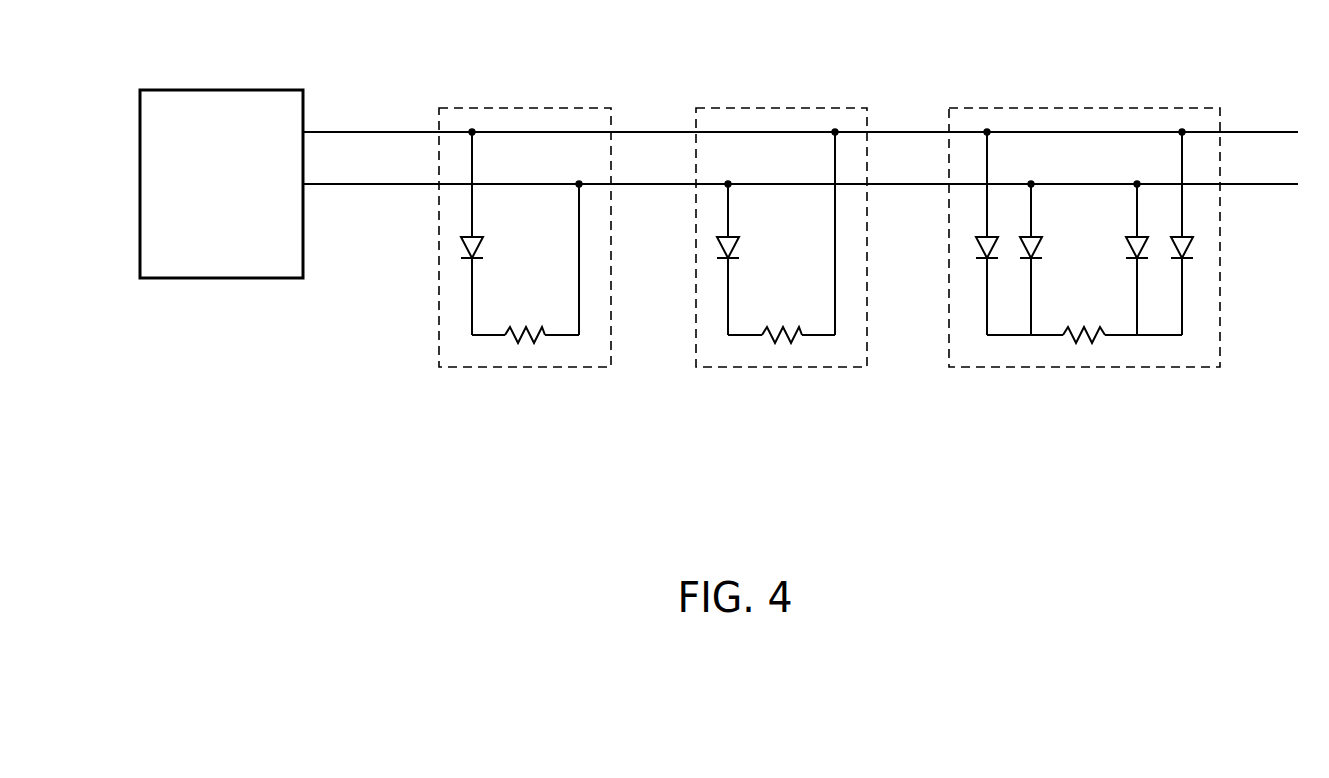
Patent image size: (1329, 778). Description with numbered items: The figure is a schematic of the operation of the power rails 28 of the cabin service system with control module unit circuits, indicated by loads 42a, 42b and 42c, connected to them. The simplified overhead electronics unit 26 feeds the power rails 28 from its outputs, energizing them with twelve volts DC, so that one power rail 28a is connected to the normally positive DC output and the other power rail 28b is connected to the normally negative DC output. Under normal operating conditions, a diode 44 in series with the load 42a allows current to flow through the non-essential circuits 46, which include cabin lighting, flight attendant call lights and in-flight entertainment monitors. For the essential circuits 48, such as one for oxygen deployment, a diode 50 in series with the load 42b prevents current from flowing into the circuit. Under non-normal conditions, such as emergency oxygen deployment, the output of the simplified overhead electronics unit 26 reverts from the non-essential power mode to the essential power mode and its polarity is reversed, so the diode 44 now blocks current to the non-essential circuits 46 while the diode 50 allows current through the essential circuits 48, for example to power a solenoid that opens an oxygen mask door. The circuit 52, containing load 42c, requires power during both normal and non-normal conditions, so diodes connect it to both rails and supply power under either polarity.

The simplified overhead electronics unit 26 is at (229, 90).
The power rails 28 is at (803, 130).
The power rail 28a is at (1264, 132).
The power rail 28b is at (1264, 184).
The non-essential circuits 46 is at (525, 258).
The diode 44 is at (482, 236).
The load 42a is at (521, 330).
The essential circuits 48 is at (781, 258).
The diode 50 is at (738, 236).
The load 42b is at (778, 330).
The circuit 52 is at (1084, 258).
The load 42c is at (1082, 330).